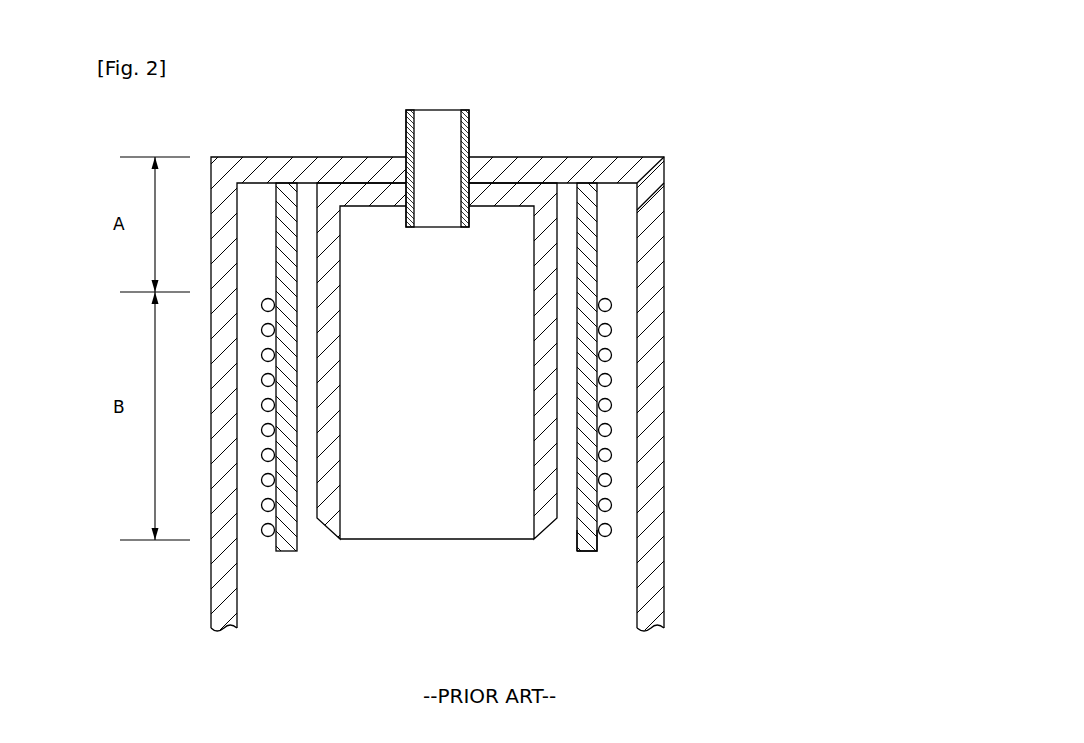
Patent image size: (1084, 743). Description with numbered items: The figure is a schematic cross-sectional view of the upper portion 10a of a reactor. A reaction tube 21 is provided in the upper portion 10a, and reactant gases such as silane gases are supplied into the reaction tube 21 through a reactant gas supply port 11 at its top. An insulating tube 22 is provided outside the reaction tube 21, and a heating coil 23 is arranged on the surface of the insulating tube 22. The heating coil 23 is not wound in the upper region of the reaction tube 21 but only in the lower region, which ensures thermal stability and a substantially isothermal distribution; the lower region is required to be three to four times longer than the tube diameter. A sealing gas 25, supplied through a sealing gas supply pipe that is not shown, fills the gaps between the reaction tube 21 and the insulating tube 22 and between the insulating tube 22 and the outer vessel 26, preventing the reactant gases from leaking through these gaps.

The upper portion of the reactor 10a is at (662, 521).
The reactant gas supply port 11 is at (469, 122).
The reaction tube 21 is at (411, 512).
The insulating tube 22 is at (598, 535).
The heating coil 23 is at (605, 428).
The sealing gas 25 is at (574, 250).
The outer vessel 26 is at (480, 394).